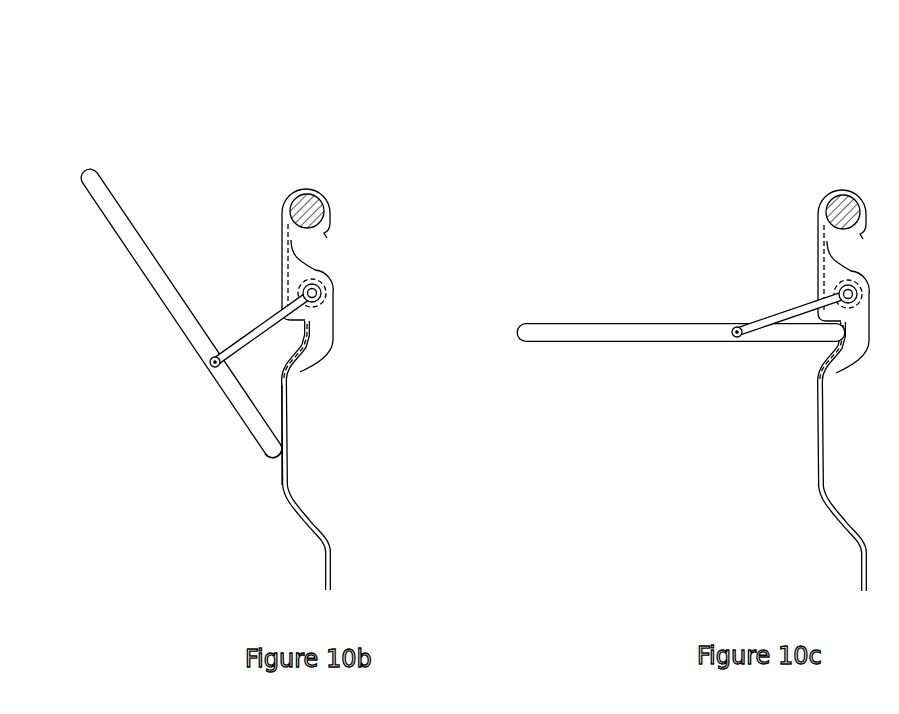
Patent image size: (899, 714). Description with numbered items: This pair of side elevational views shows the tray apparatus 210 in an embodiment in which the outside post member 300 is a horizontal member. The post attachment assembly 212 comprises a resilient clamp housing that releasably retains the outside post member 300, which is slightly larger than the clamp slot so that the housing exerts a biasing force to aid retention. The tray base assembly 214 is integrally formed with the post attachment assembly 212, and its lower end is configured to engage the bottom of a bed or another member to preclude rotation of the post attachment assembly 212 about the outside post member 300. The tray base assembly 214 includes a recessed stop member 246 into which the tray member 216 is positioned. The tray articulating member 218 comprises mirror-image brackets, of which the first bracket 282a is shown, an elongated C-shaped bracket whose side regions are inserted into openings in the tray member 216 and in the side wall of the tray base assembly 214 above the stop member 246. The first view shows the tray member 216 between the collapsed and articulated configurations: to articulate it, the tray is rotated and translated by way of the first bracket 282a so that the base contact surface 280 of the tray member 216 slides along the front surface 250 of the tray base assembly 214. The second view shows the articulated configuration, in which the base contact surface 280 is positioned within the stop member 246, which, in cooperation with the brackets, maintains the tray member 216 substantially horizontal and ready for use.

In FIG. 10B, the tray apparatus 210 is at (291, 118).
In FIG. 10C, the tray apparatus 210 is at (699, 148).
In FIG. 10B, the post attachment assembly 212 is at (311, 188).
In FIG. 10C, the post attachment assembly 212 is at (830, 192).
In FIG. 10B, the tray base assembly 214 is at (308, 527).
In FIG. 10C, the tray base assembly 214 is at (820, 412).
In FIG. 10B, the tray member 216 is at (113, 190).
In FIG. 10C, the tray member 216 is at (628, 323).
In FIG. 10B, the tray articulating member 218 is at (268, 336).
In FIG. 10C, the tray articulating member 218 is at (793, 302).
In FIG. 10B, the recessed stop member 246 is at (320, 328).
In FIG. 10C, the recessed stop member 246 is at (848, 307).
In FIG. 10B, the front surface 250 is at (280, 483).
In FIG. 10B, the base contact surface 280 is at (275, 447).
In FIG. 10B, the first bracket 282a is at (267, 313).
In FIG. 10B, the outside post member 300 is at (300, 200).
In FIG. 10C, the outside post member 300 is at (844, 203).